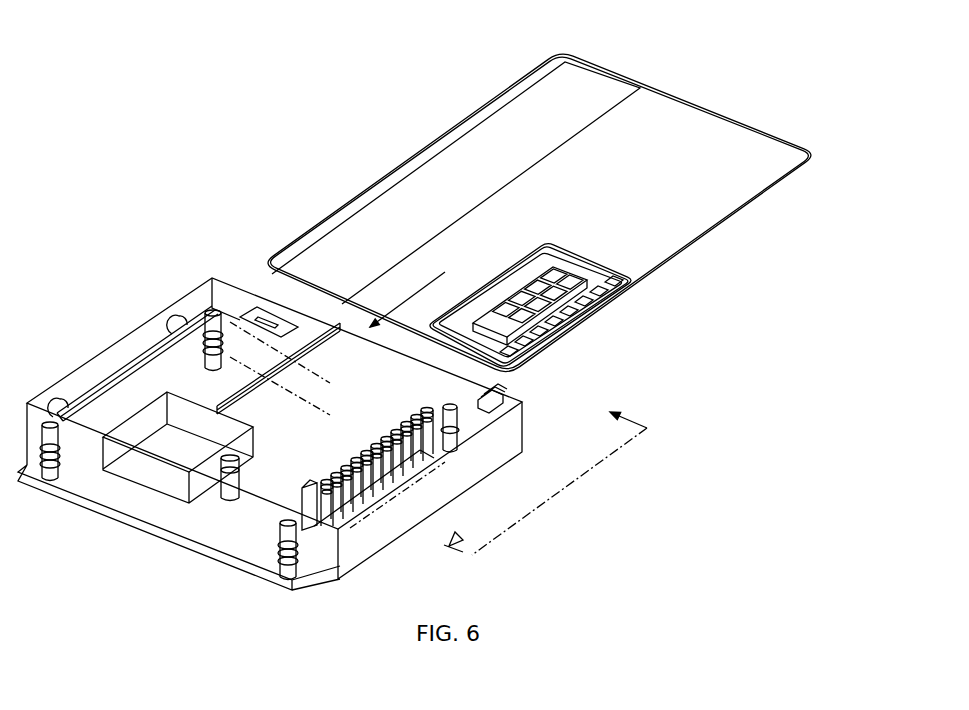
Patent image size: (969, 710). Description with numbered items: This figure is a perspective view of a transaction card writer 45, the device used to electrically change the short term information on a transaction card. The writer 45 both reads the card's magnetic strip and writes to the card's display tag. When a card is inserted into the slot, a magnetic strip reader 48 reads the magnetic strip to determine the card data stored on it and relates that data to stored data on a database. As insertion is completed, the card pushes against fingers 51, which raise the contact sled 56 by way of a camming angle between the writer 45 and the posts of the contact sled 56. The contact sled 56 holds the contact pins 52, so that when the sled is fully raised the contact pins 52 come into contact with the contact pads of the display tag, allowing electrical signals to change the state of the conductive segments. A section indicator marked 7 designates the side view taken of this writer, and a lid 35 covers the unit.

The cover 35 is at (662, 92).
The transaction card writer 45 is at (176, 565).
The magnetic strip reader 48 is at (253, 307).
The fingers 51 is at (240, 455).
The contact pins 52 is at (405, 445).
The contact sled 56 is at (317, 413).
The section line for FIG. 7 is at (545, 470).